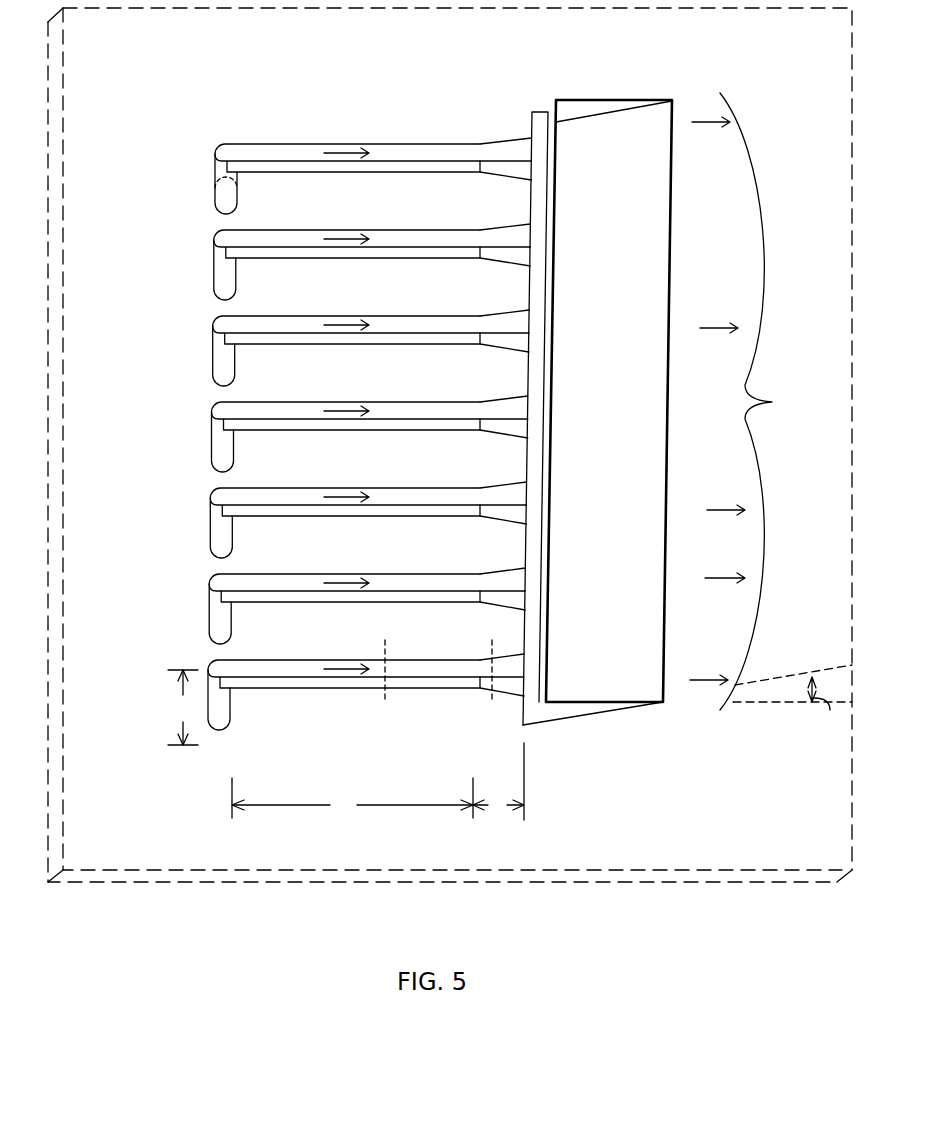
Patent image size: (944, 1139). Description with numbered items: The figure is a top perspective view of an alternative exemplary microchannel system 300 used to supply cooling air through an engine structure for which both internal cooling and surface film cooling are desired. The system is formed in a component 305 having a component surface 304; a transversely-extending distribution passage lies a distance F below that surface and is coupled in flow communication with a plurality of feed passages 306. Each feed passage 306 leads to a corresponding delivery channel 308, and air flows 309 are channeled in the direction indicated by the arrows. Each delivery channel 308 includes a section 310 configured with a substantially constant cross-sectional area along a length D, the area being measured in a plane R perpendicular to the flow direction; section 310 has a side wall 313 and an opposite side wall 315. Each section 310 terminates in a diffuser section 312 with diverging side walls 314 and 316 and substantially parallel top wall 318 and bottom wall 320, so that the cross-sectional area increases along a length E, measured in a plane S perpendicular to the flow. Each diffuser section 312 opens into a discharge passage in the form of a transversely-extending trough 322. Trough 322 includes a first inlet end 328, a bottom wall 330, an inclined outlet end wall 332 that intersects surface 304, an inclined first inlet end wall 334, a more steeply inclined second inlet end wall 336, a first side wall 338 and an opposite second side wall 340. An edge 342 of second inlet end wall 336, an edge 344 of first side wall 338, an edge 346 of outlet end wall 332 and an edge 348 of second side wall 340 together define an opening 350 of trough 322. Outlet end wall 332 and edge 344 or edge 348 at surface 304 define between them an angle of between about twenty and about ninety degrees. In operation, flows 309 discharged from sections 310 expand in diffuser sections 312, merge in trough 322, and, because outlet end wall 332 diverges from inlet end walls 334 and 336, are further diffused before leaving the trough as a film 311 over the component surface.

The microchannel system 300 is at (368, 68).
The component surface 304 is at (130, 592).
The component 305 is at (208, 876).
The feed passage 306 is at (225, 196).
The delivery channel 308 is at (293, 158).
The air flow 309 is at (343, 150).
The section 310 is at (299, 176).
The film 311 is at (757, 401).
The diffuser section 312 is at (487, 140).
The side wall 313 is at (357, 657).
The diverging side wall 314 is at (512, 647).
The opposite side wall 315 is at (300, 686).
The diverging side wall 316 is at (508, 668).
The top wall 318 is at (517, 662).
The bottom wall 320 is at (488, 695).
The trough 322 is at (667, 83).
The first inlet end 328 is at (515, 715).
The bottom wall 330 is at (533, 728).
The inclined outlet end wall 332 is at (595, 723).
The inclined first inlet end wall 334 is at (522, 700).
The second inlet end wall 336 is at (545, 108).
The first side wall 338 is at (547, 713).
The second side wall 340 is at (583, 110).
The edge 342 is at (558, 205).
The edge 344 is at (598, 698).
The edge 346 is at (662, 532).
The edge 348 is at (612, 98).
The opening 350 is at (620, 410).
The plane S is at (488, 672).
The plane R is at (380, 680).
The length D is at (352, 799).
The length E is at (498, 781).
The distance F is at (183, 707).